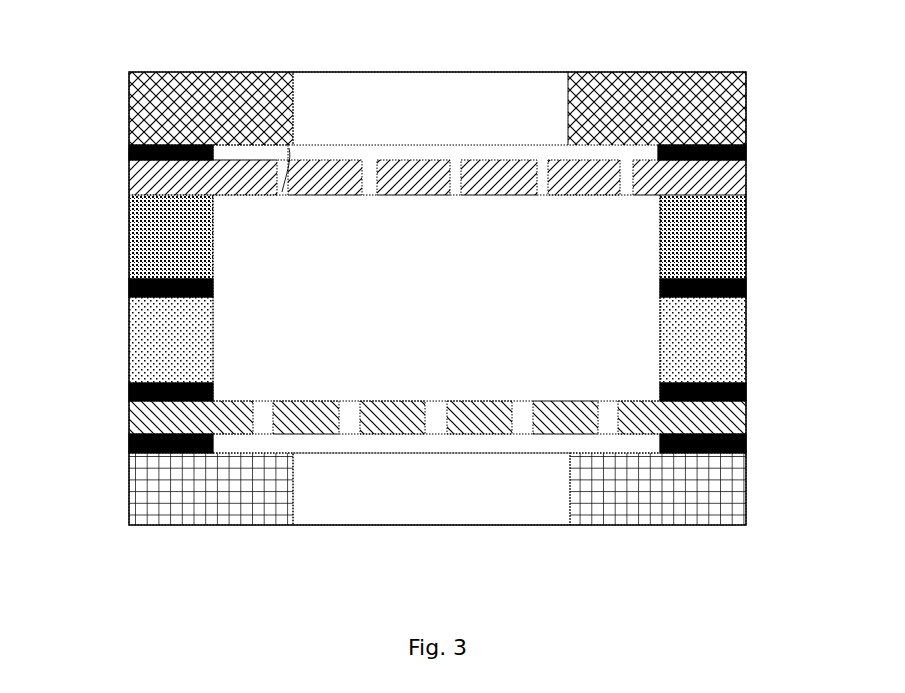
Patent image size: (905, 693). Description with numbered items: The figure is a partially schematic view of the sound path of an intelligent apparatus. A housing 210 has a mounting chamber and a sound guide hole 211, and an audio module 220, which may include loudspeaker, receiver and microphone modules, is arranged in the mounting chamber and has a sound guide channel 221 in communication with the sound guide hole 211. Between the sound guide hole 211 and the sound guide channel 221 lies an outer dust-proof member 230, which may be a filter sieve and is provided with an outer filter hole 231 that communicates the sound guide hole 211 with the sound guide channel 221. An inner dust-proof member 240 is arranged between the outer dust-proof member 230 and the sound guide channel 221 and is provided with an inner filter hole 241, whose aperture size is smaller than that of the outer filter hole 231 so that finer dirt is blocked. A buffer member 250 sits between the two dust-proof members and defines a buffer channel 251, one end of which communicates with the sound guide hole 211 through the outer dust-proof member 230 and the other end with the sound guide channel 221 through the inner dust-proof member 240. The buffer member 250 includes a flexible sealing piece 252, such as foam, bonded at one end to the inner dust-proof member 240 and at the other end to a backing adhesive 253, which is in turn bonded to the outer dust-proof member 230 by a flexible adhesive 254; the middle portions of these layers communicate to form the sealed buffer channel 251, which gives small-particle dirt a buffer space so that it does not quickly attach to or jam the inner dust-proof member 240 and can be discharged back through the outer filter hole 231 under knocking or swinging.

The housing 210 is at (748, 492).
The sound guide hole 211 is at (467, 522).
The audio module 220 is at (748, 97).
The sound guide channel 221 is at (425, 72).
The outer dust-proof member 230 is at (128, 428).
The outer filter hole 231 is at (264, 423).
The inner dust-proof member 240 is at (128, 182).
The inner filter hole 241 is at (264, 145).
The buffer member 250 is at (126, 285).
The buffer channel 251 is at (223, 345).
The flexible sealing piece 252 is at (748, 235).
The backing adhesive 253 is at (748, 283).
The flexible adhesive 254 is at (748, 336).